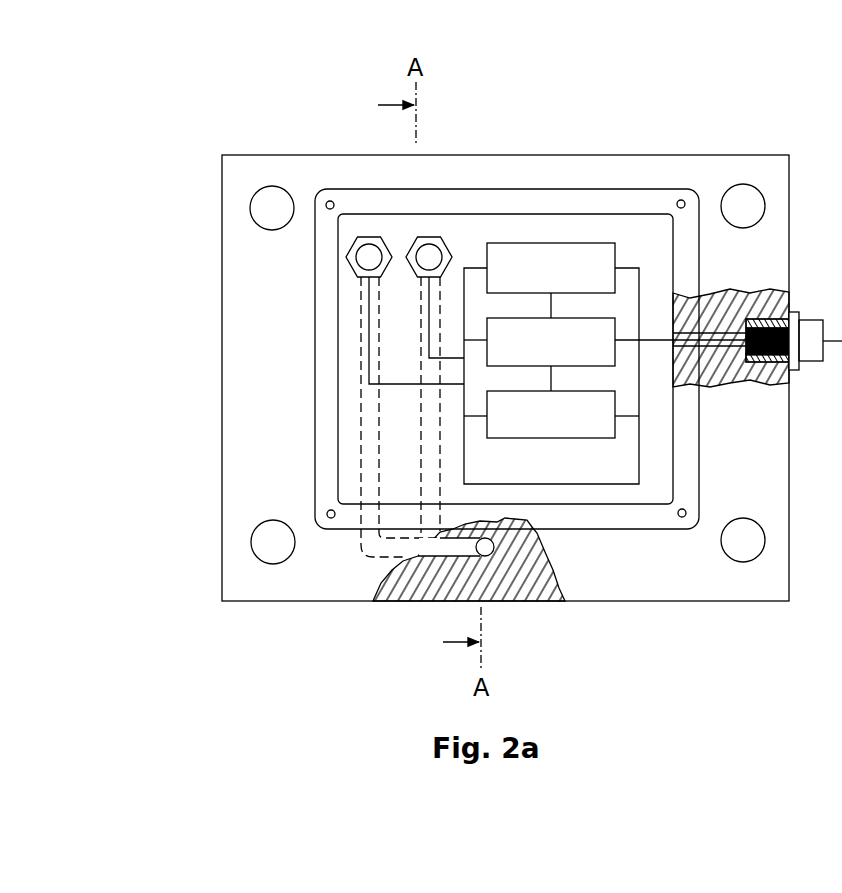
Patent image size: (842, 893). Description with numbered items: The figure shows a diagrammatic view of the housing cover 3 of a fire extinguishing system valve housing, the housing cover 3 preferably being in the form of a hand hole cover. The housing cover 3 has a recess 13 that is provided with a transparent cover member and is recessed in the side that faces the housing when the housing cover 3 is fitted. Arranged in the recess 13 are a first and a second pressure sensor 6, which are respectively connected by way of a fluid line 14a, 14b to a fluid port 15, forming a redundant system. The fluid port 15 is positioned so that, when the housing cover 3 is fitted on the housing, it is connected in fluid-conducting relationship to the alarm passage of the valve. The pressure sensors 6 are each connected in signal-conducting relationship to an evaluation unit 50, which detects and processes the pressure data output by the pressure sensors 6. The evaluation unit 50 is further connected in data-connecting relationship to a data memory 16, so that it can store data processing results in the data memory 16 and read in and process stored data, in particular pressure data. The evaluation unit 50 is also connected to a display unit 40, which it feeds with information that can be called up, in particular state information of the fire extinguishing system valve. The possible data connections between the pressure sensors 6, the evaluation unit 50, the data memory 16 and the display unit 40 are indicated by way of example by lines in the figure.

The housing cover 3 is at (643, 583).
The pressure sensor 6 is at (423, 236).
The recess 13 is at (605, 292).
The fluid line 14a is at (370, 412).
The fluid line 14b is at (428, 461).
The fluid port 15 is at (492, 556).
The data memory 16 is at (551, 342).
The display unit 40 is at (551, 414).
The evaluation unit 50 is at (551, 268).